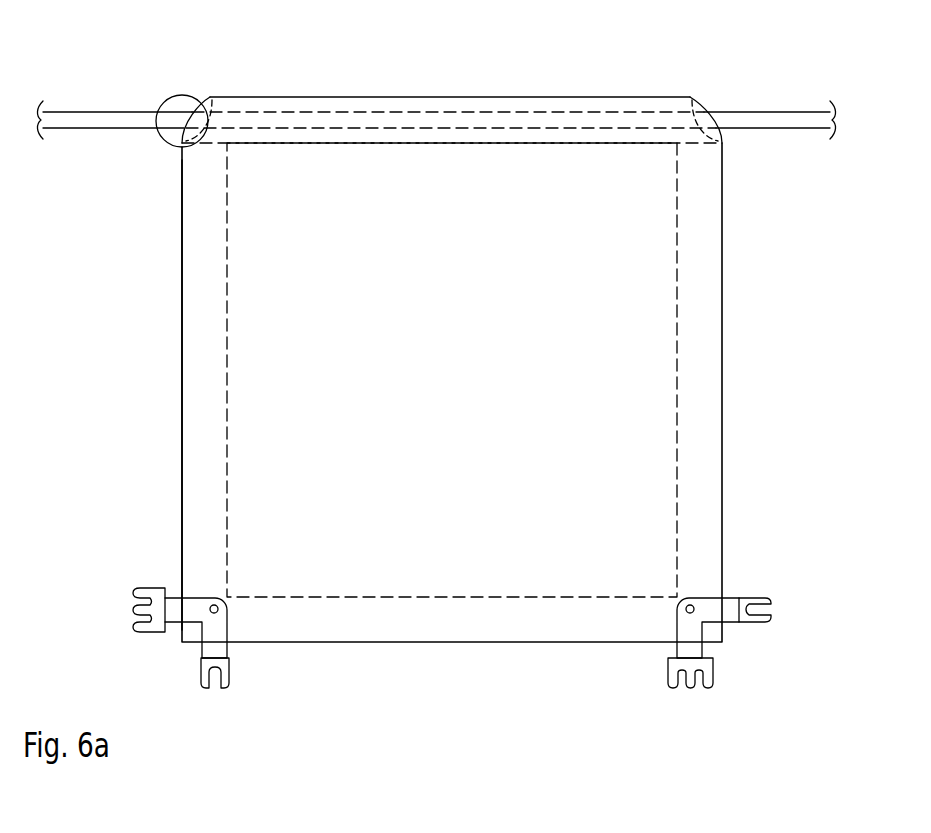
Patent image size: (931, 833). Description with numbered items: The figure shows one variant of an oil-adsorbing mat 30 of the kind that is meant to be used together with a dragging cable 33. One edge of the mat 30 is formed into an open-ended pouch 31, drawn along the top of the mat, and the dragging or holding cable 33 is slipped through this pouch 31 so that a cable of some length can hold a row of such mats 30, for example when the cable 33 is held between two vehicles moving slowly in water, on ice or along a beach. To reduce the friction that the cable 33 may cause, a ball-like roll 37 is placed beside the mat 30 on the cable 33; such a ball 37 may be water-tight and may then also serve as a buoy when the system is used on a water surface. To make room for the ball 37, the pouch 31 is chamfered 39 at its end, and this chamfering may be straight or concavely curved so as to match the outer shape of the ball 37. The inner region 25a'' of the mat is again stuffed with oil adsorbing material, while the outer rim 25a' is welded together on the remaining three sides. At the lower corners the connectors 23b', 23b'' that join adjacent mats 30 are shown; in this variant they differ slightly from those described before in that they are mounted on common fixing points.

The mat 30 is at (746, 345).
The open-ended pouch 31 is at (693, 88).
The dragging cable 33 is at (774, 110).
The ball-like roll 37 is at (171, 96).
The chamfer 39 is at (203, 88).
The outer rim 25a' is at (154, 395).
The inner region 25a'' is at (452, 370).
The connector 23b' is at (462, 603).
The connector 23b'' is at (493, 605).